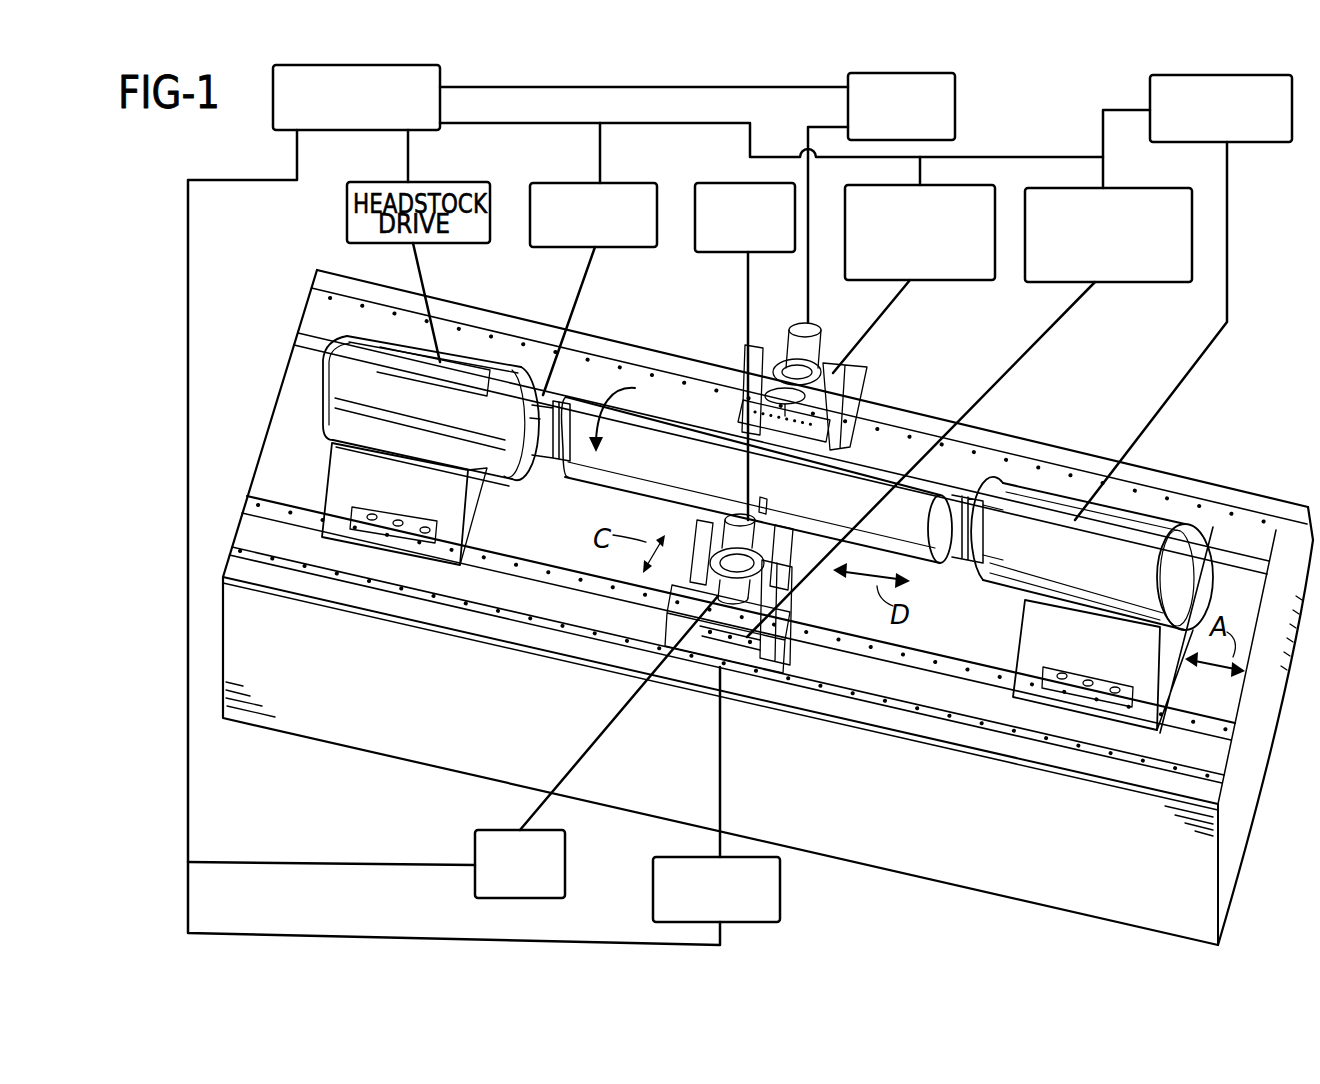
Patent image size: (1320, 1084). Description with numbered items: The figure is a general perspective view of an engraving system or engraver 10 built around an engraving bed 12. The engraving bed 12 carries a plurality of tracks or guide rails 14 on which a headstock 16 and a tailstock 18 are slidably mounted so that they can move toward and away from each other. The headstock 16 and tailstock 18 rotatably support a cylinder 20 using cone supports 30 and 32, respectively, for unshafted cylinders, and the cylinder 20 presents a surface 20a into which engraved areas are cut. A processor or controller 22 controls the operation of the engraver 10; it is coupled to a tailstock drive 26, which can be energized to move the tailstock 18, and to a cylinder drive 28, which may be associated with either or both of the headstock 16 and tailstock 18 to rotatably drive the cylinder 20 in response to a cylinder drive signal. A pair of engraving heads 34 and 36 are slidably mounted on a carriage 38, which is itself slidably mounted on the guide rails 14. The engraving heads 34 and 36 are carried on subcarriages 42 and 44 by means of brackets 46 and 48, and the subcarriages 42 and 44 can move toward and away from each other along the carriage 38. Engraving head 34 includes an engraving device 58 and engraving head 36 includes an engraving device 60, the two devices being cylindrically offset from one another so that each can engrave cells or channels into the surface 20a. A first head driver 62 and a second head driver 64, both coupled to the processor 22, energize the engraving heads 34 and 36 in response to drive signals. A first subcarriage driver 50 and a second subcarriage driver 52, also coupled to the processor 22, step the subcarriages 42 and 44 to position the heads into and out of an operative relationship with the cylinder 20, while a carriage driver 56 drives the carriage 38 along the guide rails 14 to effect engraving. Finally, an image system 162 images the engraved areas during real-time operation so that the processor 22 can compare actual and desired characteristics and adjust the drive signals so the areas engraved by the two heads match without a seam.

The engraving system 10 is at (258, 164).
The engraving bed 12 is at (1240, 846).
The guide rails 14 is at (299, 335).
The headstock 16 is at (400, 495).
The tailstock 18 is at (1143, 522).
The cylinder 20 is at (973, 507).
The surface of cylinder 20a is at (940, 560).
The processor or controller 22 is at (317, 132).
The tailstock drive 26 is at (1260, 143).
The cylinder drive 28 is at (567, 182).
The cone support 30 is at (567, 385).
The cone support 32 is at (962, 527).
The engraving head 34 is at (728, 515).
The engraving head 36 is at (788, 326).
The carriage 38 is at (690, 660).
The subcarriage 42 is at (832, 392).
The subcarriage 44 is at (757, 645).
The bracket 46 is at (818, 360).
The bracket 48 is at (712, 550).
The first subcarriage driver 50 is at (983, 282).
The second subcarriage driver 52 is at (1140, 187).
The carriage driver 56 is at (781, 892).
The engraving device 58 is at (770, 505).
The engraving device 60 is at (783, 417).
The first head driver 62 is at (957, 104).
The second head driver 64 is at (483, 829).
The image system 162 is at (710, 182).